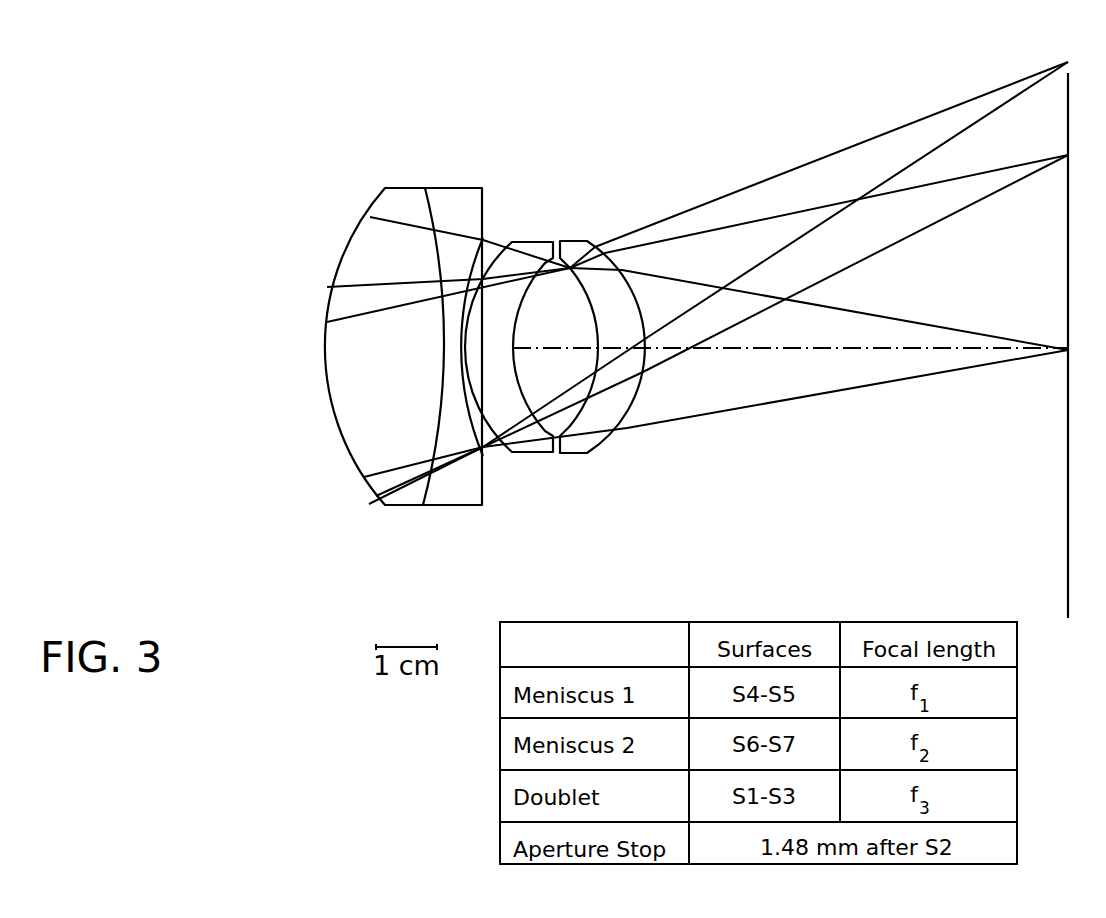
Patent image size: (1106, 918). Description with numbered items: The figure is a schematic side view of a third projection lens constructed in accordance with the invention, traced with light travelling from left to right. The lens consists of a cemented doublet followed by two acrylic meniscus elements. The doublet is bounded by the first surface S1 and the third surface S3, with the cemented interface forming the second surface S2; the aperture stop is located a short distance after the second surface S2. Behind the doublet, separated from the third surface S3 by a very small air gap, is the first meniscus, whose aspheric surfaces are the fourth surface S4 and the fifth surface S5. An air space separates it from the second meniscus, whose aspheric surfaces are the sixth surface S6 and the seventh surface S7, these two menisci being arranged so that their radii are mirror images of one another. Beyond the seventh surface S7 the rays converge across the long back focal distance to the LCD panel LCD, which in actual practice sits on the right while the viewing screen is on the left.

The first surface S1 is at (347, 248).
The second surface S2 is at (425, 210).
The third surface S3 is at (482, 240).
The fourth surface S4 is at (488, 440).
The fifth surface S5 is at (527, 443).
The sixth surface S6 is at (592, 440).
The seventh surface S7 is at (610, 438).
The LCD panel LCD is at (1068, 528).